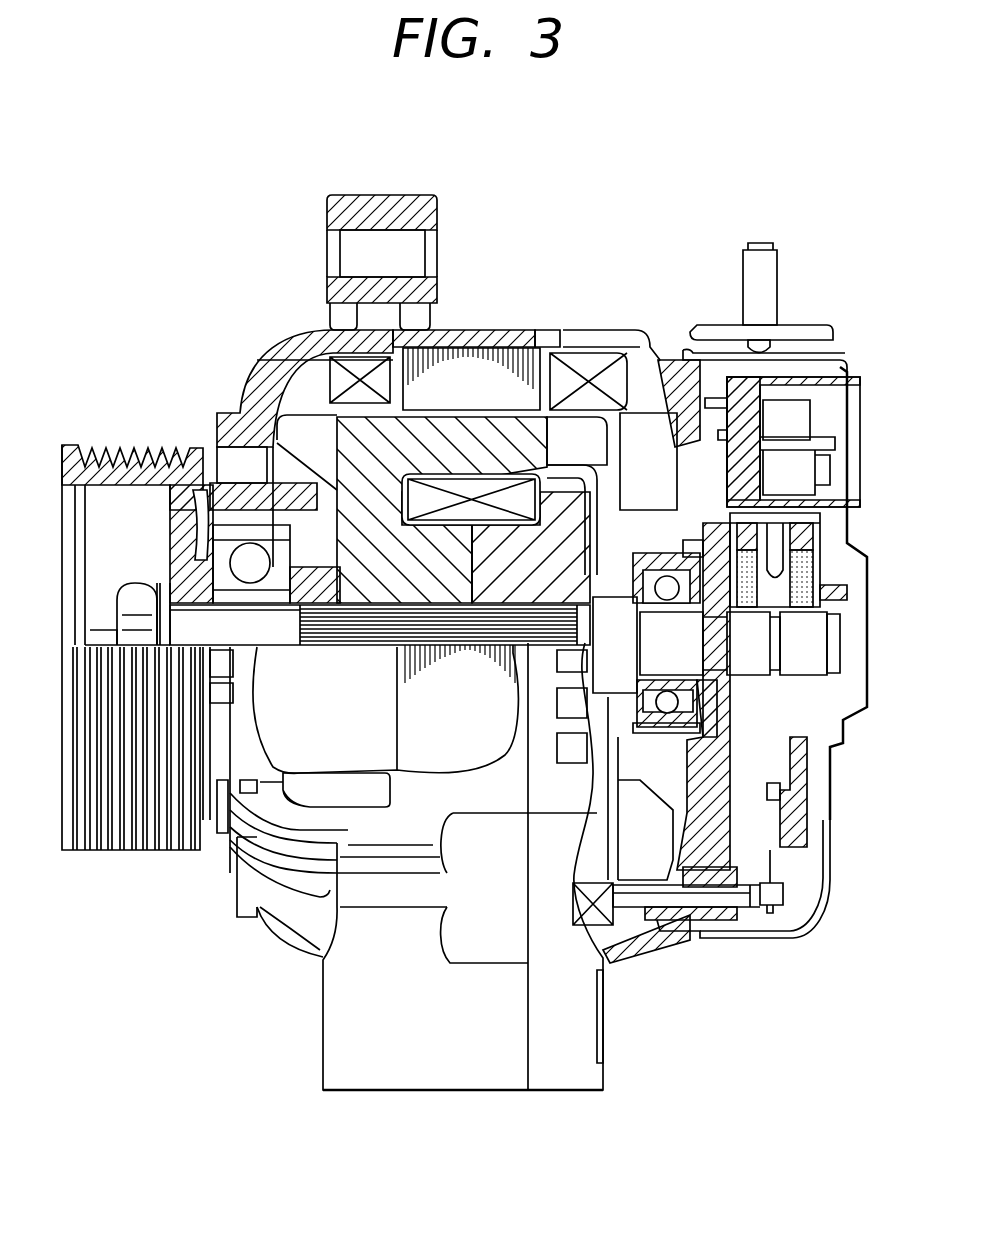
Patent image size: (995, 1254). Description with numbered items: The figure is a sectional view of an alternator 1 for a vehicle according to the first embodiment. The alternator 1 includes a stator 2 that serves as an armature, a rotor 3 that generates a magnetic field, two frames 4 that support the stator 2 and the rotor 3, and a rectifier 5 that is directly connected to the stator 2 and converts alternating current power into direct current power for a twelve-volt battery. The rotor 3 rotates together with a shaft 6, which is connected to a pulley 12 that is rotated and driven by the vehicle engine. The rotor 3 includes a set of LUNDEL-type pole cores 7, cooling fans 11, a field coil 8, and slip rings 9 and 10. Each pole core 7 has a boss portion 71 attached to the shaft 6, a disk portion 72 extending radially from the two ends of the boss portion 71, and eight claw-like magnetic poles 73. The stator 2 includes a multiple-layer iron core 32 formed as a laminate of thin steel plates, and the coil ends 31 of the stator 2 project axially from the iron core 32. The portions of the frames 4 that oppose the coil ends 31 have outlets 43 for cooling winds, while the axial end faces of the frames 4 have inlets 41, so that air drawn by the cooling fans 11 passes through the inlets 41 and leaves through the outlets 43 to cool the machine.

The alternator 1 is at (598, 210).
The stator 2 is at (632, 366).
The rotor 3 is at (258, 370).
The frame 4 is at (527, 347).
The rectifier 5 is at (805, 834).
The shaft 6 is at (190, 617).
The LUNDEL-type pole core 7 is at (673, 357).
The field coil 8 is at (487, 478).
The slip ring 9 is at (753, 660).
The slip ring 10 is at (817, 640).
The cooling fan 11 is at (233, 463).
The pulley 12 is at (127, 457).
The coil end 31 is at (330, 368).
The iron core 32 is at (487, 347).
The inlet 41 is at (233, 463).
The outlet 43 is at (295, 337).
The boss portion 71 is at (593, 550).
The disk portion 72 is at (222, 413).
The claw-like magnetic pole 73 is at (293, 337).